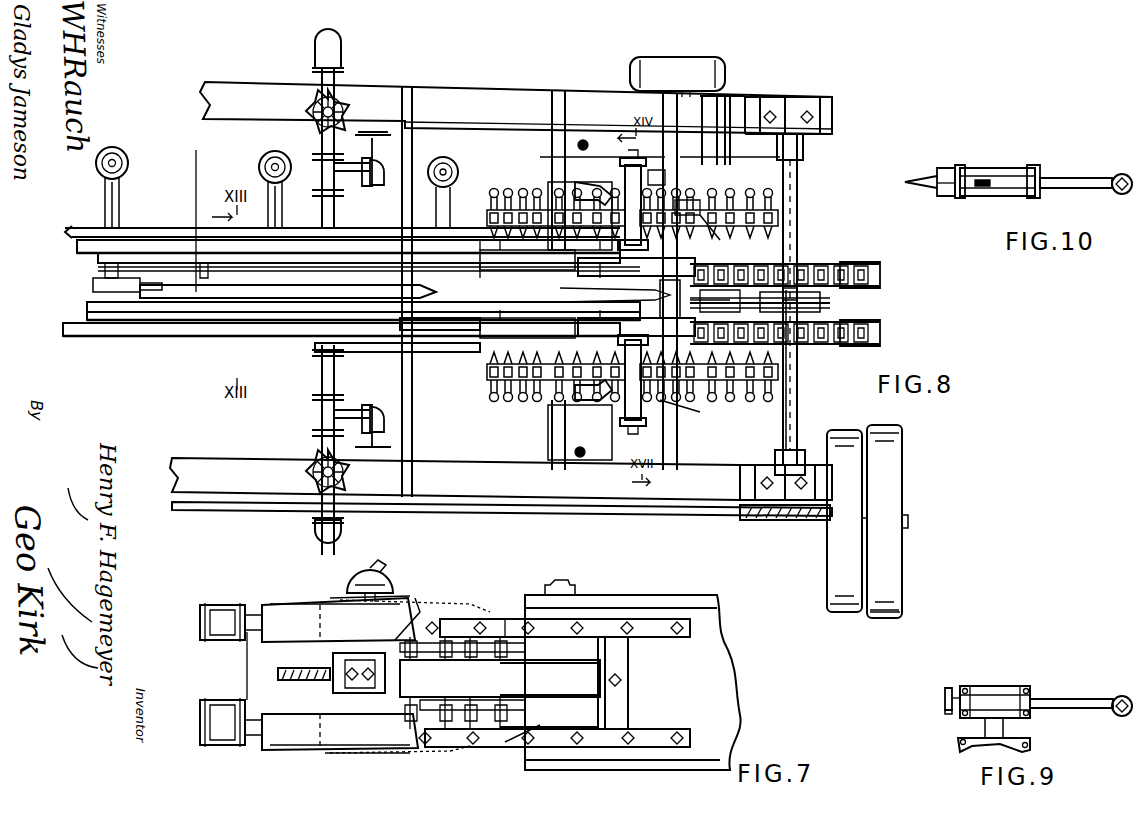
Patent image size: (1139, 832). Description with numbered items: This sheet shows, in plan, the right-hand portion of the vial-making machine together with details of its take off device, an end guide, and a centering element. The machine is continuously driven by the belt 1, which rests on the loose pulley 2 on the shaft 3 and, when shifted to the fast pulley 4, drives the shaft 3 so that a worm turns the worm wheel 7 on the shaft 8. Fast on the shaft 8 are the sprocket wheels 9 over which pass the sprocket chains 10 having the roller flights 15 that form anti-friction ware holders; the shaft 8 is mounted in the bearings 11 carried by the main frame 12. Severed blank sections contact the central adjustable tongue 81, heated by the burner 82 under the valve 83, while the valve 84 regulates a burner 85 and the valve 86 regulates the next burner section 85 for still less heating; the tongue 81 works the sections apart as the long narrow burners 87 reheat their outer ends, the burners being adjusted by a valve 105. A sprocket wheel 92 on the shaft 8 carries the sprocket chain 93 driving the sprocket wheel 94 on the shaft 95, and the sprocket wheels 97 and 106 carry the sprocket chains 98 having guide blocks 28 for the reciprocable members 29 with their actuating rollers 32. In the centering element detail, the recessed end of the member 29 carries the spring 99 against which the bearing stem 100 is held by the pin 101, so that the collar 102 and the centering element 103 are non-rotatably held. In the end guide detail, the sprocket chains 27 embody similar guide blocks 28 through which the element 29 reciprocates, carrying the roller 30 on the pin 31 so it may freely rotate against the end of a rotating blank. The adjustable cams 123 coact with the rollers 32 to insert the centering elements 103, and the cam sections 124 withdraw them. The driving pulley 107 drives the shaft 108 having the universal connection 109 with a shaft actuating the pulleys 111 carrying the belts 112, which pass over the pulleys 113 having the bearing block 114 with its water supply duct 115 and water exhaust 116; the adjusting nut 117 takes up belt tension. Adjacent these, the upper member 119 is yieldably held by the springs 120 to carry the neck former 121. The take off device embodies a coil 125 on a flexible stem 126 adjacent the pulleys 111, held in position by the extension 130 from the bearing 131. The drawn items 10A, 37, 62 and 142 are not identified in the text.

In FIG. 8, the belt 1 is at (880, 616).
In FIG. 8, the loose pulley 2 is at (898, 588).
In FIG. 8, the shaft 3 is at (904, 526).
In FIG. 8, the fast pulley 4 is at (848, 613).
In FIG. 8, the worm wheel 7 is at (778, 520).
In FIG. 8, the shaft 8 is at (792, 410).
In FIG. 7, the shaft 8 is at (575, 583).
In FIG. 8, the sprocket wheels 9 is at (860, 316).
In FIG. 7, the sprocket wheels 9 is at (508, 616).
In FIG. 8, the sprocket chains 10 is at (870, 280).
In FIG. 7, the sprocket chains 10 is at (478, 600).
In FIG. 8, the valve 10A is at (340, 98).
In FIG. 8, the bearings 11 is at (796, 110).
In FIG. 8, the main frame 12 is at (833, 106).
In FIG. 8, the roller flights 15 is at (858, 262).
In FIG. 7, the roller flights 15 is at (222, 700).
In FIG. 9, the sprocket chains 27 is at (1010, 730).
In FIG. 8, the guide blocks 28 is at (778, 233).
In FIG. 10, the guide blocks 28 is at (960, 168).
In FIG. 9, the guide blocks 28 is at (1030, 690).
In FIG. 8, the rectangular nonrotatable element 29 is at (490, 398).
In FIG. 10, the rectangular nonrotatable element 29 is at (1088, 178).
In FIG. 9, the rectangular nonrotatable element 29 is at (1083, 702).
In FIG. 9, the roller 30 is at (948, 688).
In FIG. 9, the pin 31 is at (952, 714).
In FIG. 8, the guiding roller 32 is at (524, 194).
In FIG. 10, the guiding roller 32 is at (1123, 174).
In FIG. 9, the guiding roller 32 is at (1122, 696).
In FIG. 8, the pin 37 is at (676, 342).
In FIG. 8, the pivot 62 is at (578, 146).
In FIG. 8, the dividing member or tongue 81 is at (220, 293).
In FIG. 8, the burner 82 is at (92, 283).
In FIG. 8, the valve 83 is at (120, 154).
In FIG. 8, the valve 84 is at (266, 158).
In FIG. 8, the burner 85 is at (400, 292).
In FIG. 8, the valve 86 is at (455, 162).
In FIG. 8, the long narrow burners 87 is at (446, 368).
In FIG. 8, the sprocket wheel 92 is at (800, 300).
In FIG. 8, the sprocket chain 93 is at (720, 297).
In FIG. 8, the sprocket wheel 94 is at (712, 310).
In FIG. 8, the shaft 95 is at (690, 348).
In FIG. 8, the sprocket wheels 97 is at (690, 200).
In FIG. 8, the sprocket chains 98 is at (570, 190).
In FIG. 8, the spring 99 is at (745, 376).
In FIG. 10, the spring 99 is at (992, 190).
In FIG. 10, the bearing stem 100 is at (955, 200).
In FIG. 10, the pin 101 is at (985, 172).
In FIG. 8, the collar 102 is at (666, 302).
In FIG. 10, the collar 102 is at (945, 194).
In FIG. 8, the centering element 103 is at (486, 360).
In FIG. 10, the centering element 103 is at (922, 174).
In FIG. 8, the valve 105 is at (374, 135).
In FIG. 8, the sprocket wheels 106 is at (600, 350).
In FIG. 8, the driving pulley 107 is at (726, 74).
In FIG. 8, the shaft 108 is at (740, 95).
In FIG. 7, the shaft 108 is at (382, 565).
In FIG. 7, the universal connection 109 is at (388, 582).
In FIG. 7, the pulleys 111 is at (340, 604).
In FIG. 8, the belts 112 is at (636, 297).
In FIG. 7, the belts 112 is at (270, 603).
In FIG. 8, the pulleys 113 is at (600, 300).
In FIG. 8, the bearing block 114 is at (607, 312).
In FIG. 8, the water supply duct 115 is at (438, 300).
In FIG. 8, the water exhaust 116 is at (445, 292).
In FIG. 8, the adjusting nut 117 is at (678, 288).
In FIG. 7, the adjusting nut 117 is at (333, 668).
In FIG. 8, the upper member 119 is at (640, 186).
In FIG. 8, the springs 120 is at (665, 174).
In FIG. 8, the neck former 121 is at (740, 206).
In FIG. 8, the adjustable cams 123 is at (603, 190).
In FIG. 8, the cam sections 124 is at (712, 200).
In FIG. 7, the coil 125 is at (365, 598).
In FIG. 7, the flexible stem 126 is at (335, 598).
In FIG. 7, the extension 130 is at (540, 728).
In FIG. 8, the bearing 131 is at (678, 328).
In FIG. 7, the bearing 131 is at (396, 640).
In FIG. 8, the pin 142 is at (740, 352).